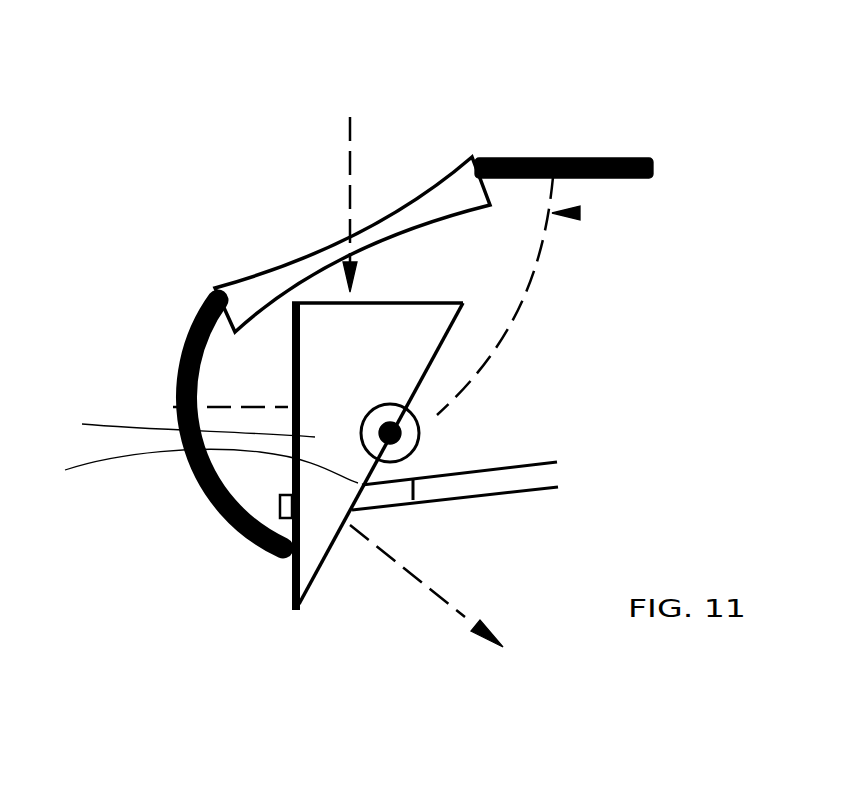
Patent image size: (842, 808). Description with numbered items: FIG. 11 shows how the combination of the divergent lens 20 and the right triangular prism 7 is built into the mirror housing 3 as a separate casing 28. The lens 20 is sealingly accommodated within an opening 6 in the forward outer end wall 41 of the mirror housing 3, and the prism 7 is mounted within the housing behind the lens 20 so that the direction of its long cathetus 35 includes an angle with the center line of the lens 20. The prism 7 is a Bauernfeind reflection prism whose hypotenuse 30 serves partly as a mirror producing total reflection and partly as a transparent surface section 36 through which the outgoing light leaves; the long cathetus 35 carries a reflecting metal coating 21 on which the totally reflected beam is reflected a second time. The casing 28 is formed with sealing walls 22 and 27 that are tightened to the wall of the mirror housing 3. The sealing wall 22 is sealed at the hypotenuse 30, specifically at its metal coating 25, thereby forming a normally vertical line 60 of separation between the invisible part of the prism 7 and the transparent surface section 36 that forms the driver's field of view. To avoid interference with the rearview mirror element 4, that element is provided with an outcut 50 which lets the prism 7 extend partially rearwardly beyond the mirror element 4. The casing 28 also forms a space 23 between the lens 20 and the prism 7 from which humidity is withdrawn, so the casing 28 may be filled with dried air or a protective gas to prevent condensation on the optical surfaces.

The mirror housing 3 is at (593, 157).
The rearview mirror element 4 is at (548, 472).
The opening 6 is at (474, 183).
The right triangular prism 7 is at (187, 426).
The divergent lens 20 is at (434, 200).
The reflecting metal coating 21 is at (280, 495).
The sealing wall 22 is at (535, 275).
The space 23 is at (487, 273).
The metal coating 25 is at (440, 355).
The sealing wall 27 is at (240, 405).
The casing 28 is at (578, 213).
The hypotenuse 30 is at (188, 475).
The long cathetus 35 is at (305, 563).
The transparent surface section 36 is at (327, 558).
The forward outer end wall 41 is at (653, 167).
The outcut 50 is at (405, 492).
The line of separation 60 is at (371, 418).